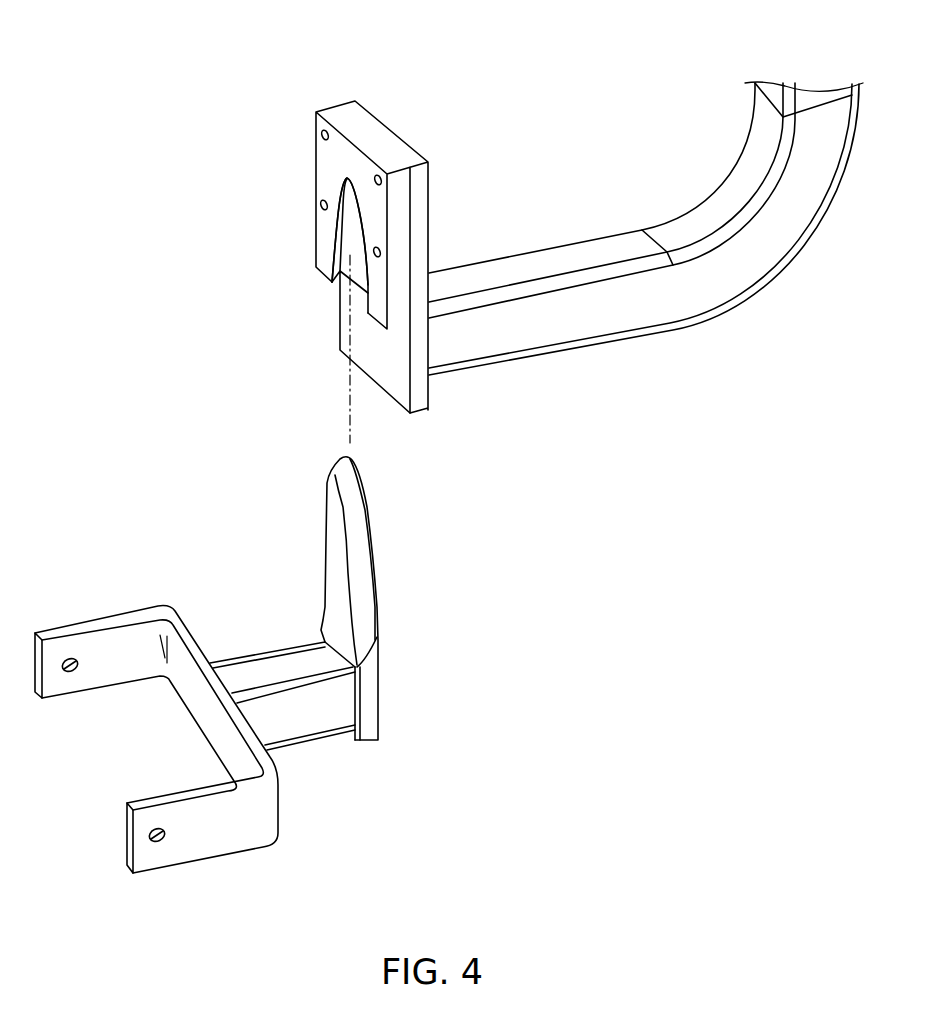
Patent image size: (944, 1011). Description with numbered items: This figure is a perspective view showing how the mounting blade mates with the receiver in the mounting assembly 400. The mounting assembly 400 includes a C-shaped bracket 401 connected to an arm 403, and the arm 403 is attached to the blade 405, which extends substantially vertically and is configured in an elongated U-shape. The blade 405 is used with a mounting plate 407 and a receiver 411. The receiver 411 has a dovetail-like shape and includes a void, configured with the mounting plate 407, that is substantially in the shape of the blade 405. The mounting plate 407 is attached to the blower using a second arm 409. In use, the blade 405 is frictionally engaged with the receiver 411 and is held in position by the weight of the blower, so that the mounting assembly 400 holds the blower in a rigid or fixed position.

The mounting assembly 400 is at (531, 724).
The C-shaped bracket 401 is at (200, 830).
The arm 403 is at (268, 670).
The blade 405 is at (358, 593).
The mounting plate 407 is at (360, 133).
The arm 409 is at (763, 240).
The receiver 411 is at (333, 281).